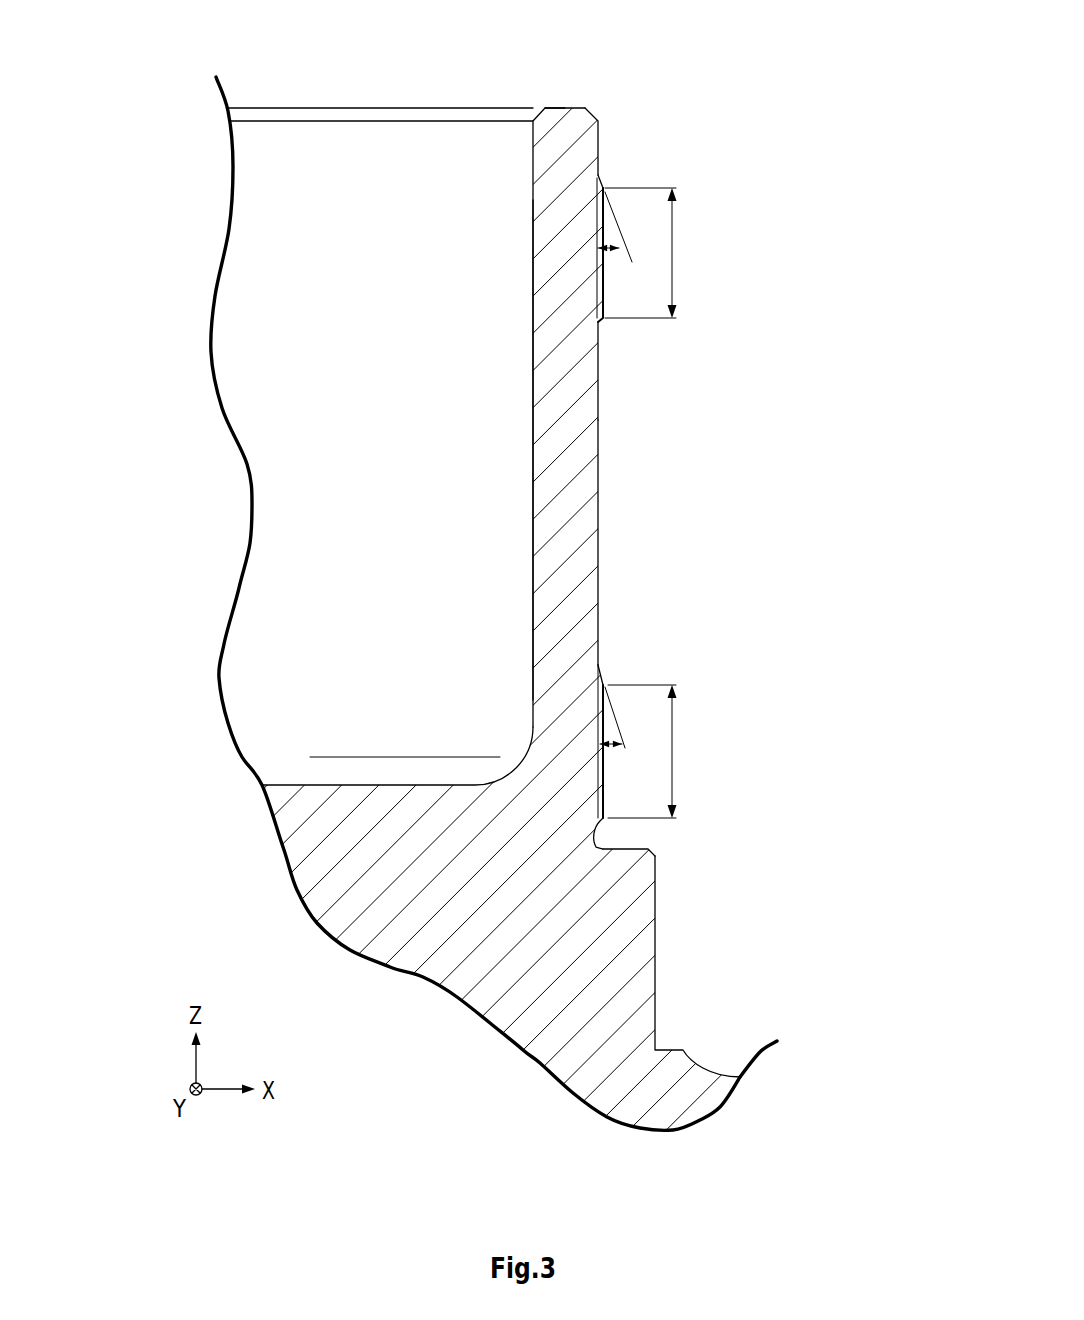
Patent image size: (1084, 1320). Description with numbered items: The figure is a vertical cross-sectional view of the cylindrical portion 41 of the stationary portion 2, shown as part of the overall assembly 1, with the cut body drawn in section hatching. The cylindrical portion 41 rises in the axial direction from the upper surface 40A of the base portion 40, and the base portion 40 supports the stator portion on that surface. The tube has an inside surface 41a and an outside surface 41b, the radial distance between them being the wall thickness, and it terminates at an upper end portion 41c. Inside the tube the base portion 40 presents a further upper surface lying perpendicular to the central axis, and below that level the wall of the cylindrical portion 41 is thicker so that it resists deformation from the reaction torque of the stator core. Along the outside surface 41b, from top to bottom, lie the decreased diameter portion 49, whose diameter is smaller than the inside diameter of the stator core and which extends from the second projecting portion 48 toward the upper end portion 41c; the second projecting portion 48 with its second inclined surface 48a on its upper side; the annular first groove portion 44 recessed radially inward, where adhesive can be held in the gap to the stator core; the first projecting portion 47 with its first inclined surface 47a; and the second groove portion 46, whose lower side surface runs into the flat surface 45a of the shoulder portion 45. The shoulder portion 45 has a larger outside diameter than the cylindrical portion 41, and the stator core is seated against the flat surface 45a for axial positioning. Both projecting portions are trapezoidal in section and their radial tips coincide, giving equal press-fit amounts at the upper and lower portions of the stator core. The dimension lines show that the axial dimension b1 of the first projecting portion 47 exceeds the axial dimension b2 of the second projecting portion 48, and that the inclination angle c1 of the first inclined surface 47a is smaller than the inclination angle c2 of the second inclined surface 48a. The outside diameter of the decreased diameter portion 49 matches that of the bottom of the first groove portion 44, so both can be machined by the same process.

The vehicle body structure 1 is at (330, 88).
The stationary portion 2 is at (716, 1118).
The base portion 40 is at (613, 1097).
The upper surface 40A is at (360, 785).
The cylindrical portion 41 is at (534, 108).
The inside surface 41a is at (533, 300).
The outside surface 41b is at (608, 298).
The upper end portion 41c is at (562, 107).
The first groove portion 44 is at (600, 517).
The shoulder portion 45 is at (657, 938).
The flat surface 45a is at (638, 842).
The second groove portion 46 is at (597, 837).
The first projecting portion 47 is at (601, 767).
The first inclined surface 47a is at (605, 668).
The second projecting portion 48 is at (599, 277).
The second inclined surface 48a is at (602, 178).
The decreased diameter portion 49 is at (600, 143).
The axial dimension of first projecting portion b1 is at (673, 740).
The axial dimension of second projecting portion b2 is at (673, 248).
The angle of inclination of first inclined surface c1 is at (614, 744).
The angle of inclination of second inclined surface c2 is at (614, 250).